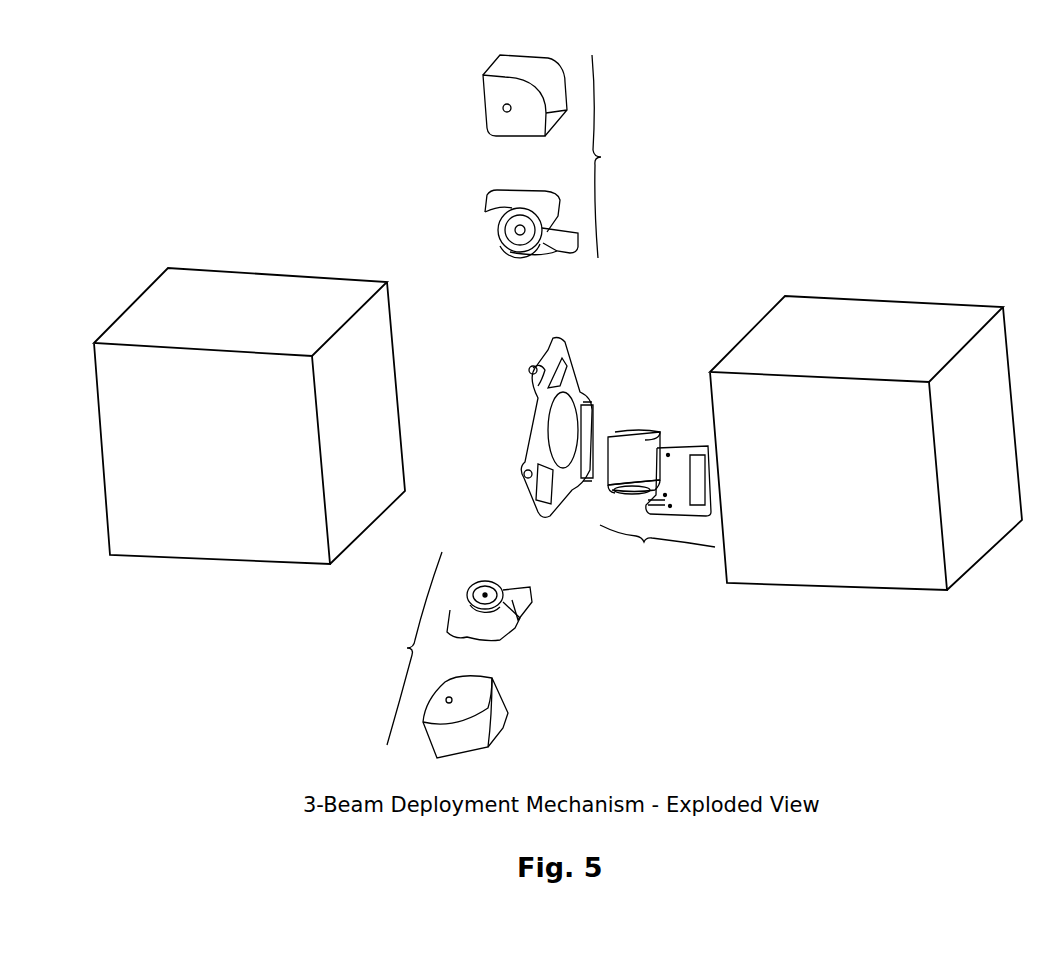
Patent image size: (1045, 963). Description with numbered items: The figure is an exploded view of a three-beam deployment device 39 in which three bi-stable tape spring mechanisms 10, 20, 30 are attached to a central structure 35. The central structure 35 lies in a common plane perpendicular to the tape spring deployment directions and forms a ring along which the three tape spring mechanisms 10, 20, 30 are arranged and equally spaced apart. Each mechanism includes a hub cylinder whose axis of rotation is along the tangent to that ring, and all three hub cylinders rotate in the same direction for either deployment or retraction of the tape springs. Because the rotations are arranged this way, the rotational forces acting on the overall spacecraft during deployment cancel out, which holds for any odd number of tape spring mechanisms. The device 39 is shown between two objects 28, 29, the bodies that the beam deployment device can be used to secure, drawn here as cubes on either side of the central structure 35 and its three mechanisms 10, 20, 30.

The bi-stable tape spring mechanism 10 is at (555, 156).
The bi-stable tape spring mechanism 20 is at (657, 498).
The object 28 is at (249, 416).
The object 29 is at (866, 443).
The bi-stable tape spring mechanism 30 is at (457, 655).
The central structure 35 is at (573, 393).
The 3-beam deployment device 39 is at (722, 124).